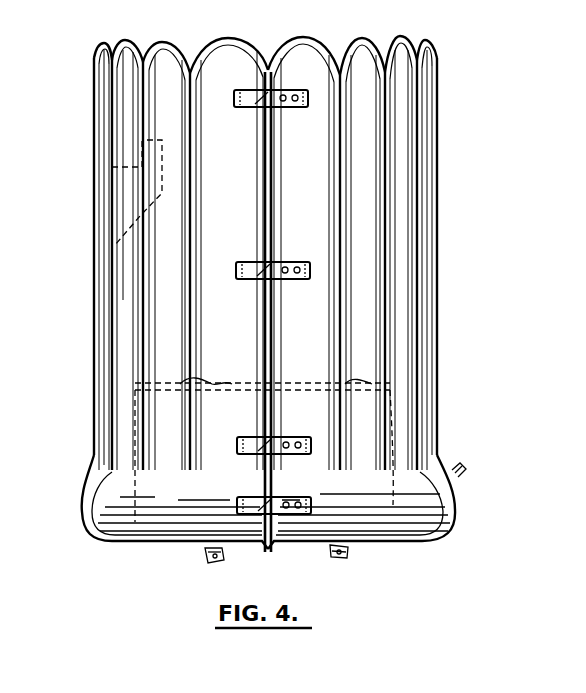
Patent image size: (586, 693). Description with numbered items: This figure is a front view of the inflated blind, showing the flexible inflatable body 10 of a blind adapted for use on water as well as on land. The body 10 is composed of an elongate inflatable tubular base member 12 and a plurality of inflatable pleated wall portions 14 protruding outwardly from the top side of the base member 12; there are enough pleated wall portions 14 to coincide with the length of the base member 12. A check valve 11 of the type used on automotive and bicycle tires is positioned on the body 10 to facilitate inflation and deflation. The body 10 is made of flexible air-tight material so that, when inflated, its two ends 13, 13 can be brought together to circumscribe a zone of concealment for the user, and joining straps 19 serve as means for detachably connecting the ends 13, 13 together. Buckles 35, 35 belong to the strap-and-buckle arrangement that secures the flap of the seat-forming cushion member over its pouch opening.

The flexible inflatable body 10 is at (283, 302).
The check valve 11 is at (461, 465).
The inflatable tubular base member 12 is at (108, 516).
The ends of the body 13 is at (282, 68).
The inflatable pleated wall portions 14 is at (237, 198).
The joining straps 19 is at (262, 97).
The buckles 35 is at (212, 562).